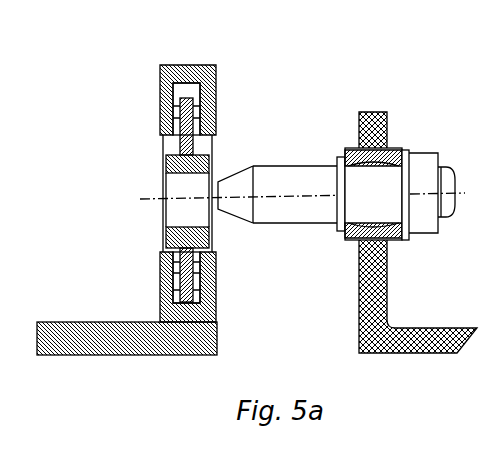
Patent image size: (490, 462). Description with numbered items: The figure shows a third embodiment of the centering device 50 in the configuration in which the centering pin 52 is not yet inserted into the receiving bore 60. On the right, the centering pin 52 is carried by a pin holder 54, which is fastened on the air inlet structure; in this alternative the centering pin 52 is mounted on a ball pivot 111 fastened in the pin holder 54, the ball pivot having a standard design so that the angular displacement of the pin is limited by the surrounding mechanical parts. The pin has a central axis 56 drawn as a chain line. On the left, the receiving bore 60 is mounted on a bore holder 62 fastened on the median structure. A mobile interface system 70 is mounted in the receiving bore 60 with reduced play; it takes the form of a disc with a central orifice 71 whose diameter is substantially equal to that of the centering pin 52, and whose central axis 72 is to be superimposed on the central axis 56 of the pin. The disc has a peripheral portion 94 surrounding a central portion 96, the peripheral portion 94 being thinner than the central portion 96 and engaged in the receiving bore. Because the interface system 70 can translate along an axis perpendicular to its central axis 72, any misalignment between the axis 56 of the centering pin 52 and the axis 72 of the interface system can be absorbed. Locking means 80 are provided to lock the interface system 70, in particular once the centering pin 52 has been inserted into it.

The device 50 is at (322, 90).
The centering pin 52 is at (317, 205).
The pin holder 54 is at (386, 113).
The central axis 56 is at (300, 194).
The receiving bore 60 is at (204, 151).
The bore holder 62 is at (160, 72).
The mobile interface system 70 is at (180, 155).
The central orifice 71 is at (178, 185).
The central axis 72 is at (157, 204).
The locking means 80 is at (212, 103).
The peripheral portion 94 is at (176, 101).
The central portion 96 is at (165, 164).
The ball pivot 111 is at (401, 150).